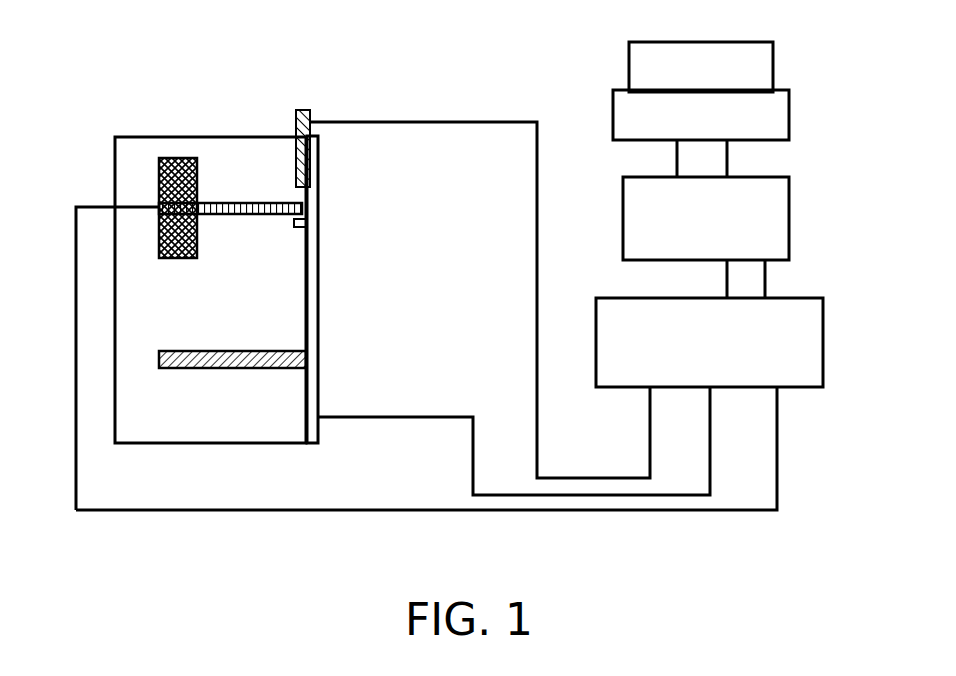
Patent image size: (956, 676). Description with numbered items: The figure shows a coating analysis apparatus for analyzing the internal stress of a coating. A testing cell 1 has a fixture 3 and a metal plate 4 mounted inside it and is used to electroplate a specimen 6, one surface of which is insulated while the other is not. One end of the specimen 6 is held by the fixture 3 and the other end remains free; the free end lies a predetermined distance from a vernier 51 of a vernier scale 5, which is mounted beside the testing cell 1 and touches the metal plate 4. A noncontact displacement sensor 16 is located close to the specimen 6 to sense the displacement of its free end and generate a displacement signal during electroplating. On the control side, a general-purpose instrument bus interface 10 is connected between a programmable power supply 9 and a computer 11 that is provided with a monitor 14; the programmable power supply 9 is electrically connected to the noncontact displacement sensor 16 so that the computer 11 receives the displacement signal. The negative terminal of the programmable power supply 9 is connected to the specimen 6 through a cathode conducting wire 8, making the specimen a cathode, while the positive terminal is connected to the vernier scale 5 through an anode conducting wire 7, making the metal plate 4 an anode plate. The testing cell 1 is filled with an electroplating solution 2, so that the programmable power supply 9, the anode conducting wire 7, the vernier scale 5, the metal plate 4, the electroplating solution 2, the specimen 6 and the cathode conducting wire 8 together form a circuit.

The testing cell 1 is at (175, 443).
The electroplating solution 2 is at (125, 367).
The fixture 3 is at (183, 258).
The metal plate 4 is at (198, 351).
The vernier scale 5 is at (318, 327).
The specimen 6 is at (213, 203).
The anode conducting wire 7 is at (395, 417).
The cathode conducting wire 8 is at (290, 510).
The programmable power supply 9 is at (813, 298).
The IEEE 488 interface 10 is at (789, 220).
The computer 11 is at (789, 115).
The monitor 14 is at (773, 52).
The noncontact displacement sensor 16 is at (296, 120).
The vernier 51 is at (297, 228).